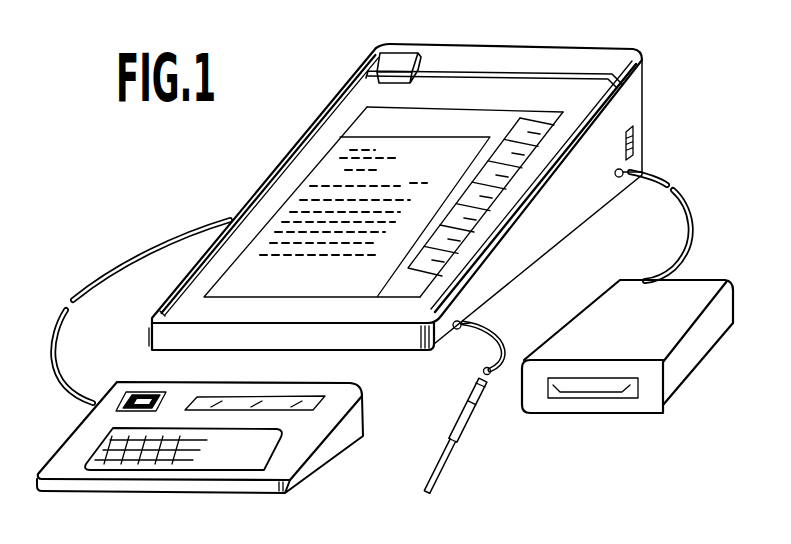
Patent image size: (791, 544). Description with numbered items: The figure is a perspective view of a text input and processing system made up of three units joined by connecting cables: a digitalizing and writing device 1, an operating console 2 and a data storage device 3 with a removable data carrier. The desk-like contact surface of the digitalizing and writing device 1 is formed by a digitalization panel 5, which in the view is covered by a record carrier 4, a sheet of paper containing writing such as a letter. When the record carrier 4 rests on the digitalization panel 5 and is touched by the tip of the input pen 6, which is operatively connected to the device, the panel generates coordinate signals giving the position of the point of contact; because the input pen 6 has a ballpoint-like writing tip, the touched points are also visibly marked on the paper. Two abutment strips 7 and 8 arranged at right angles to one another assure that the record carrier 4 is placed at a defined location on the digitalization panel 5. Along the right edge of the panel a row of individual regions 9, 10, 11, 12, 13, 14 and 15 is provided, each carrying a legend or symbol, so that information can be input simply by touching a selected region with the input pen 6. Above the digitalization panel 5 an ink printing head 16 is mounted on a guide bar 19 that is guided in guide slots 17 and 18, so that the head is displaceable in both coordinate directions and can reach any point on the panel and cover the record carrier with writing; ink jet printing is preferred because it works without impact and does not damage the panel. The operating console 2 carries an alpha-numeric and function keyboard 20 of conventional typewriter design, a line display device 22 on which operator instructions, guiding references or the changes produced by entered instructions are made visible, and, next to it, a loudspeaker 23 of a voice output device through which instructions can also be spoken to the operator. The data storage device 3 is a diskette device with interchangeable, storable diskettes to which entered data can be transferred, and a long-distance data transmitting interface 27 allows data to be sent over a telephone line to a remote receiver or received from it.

The digitalizing and writing device 1 is at (446, 350).
The operating console 2 is at (228, 494).
The data storage device 3 is at (565, 418).
The record carrier 4 is at (247, 273).
The digitalization panel 5 is at (372, 125).
The input pen 6 is at (457, 447).
The abutment strip 7 is at (362, 300).
The abutment strip 8 is at (323, 119).
The individual region 9 is at (527, 127).
The individual region 10 is at (528, 150).
The individual region 11 is at (512, 168).
The individual region 12 is at (497, 188).
The individual region 13 is at (483, 207).
The individual region 14 is at (467, 229).
The individual region 15 is at (447, 250).
The ink printing head 16 is at (413, 51).
The guide slot 17 is at (158, 305).
The guide slot 18 is at (640, 73).
The guide bar 19 is at (530, 68).
The alpha-numeric and function keyboard 20 is at (170, 465).
The line display device 22 is at (363, 399).
The loudspeaker 23 is at (118, 395).
The long-distance data transmitting interface 27 is at (634, 151).